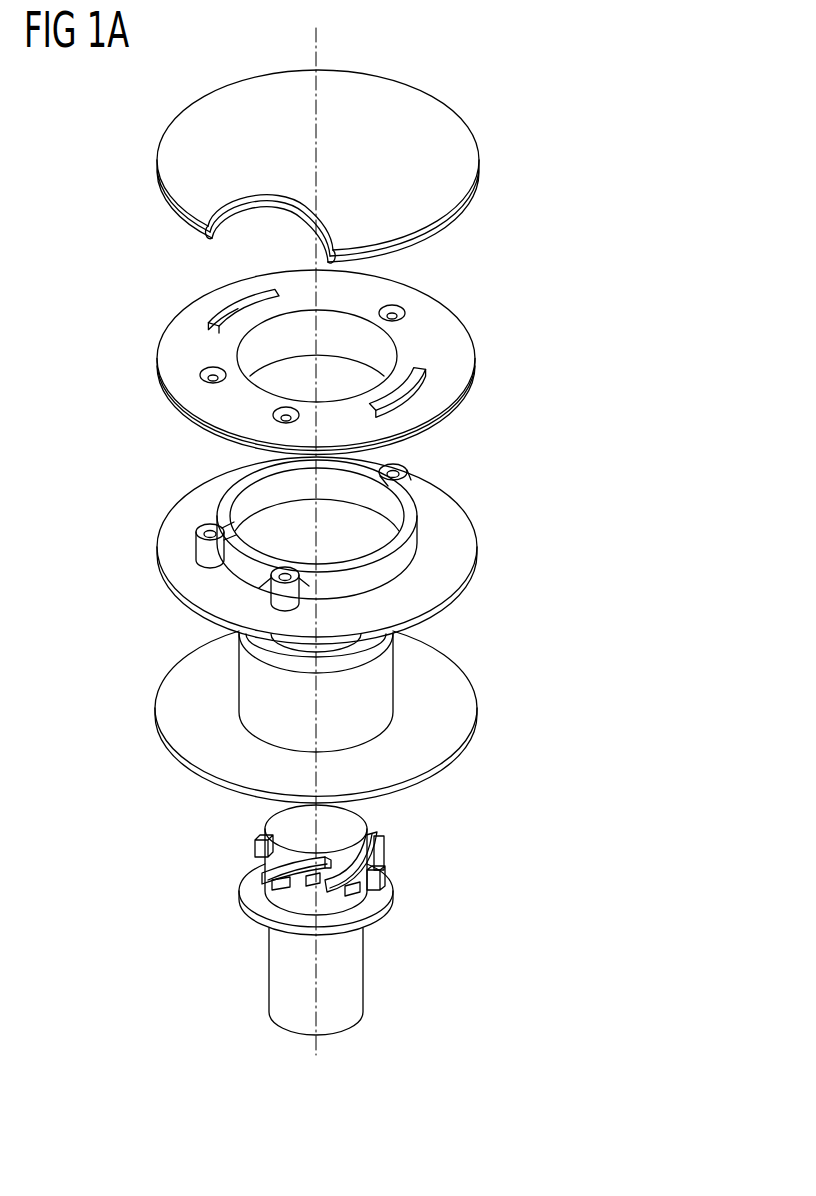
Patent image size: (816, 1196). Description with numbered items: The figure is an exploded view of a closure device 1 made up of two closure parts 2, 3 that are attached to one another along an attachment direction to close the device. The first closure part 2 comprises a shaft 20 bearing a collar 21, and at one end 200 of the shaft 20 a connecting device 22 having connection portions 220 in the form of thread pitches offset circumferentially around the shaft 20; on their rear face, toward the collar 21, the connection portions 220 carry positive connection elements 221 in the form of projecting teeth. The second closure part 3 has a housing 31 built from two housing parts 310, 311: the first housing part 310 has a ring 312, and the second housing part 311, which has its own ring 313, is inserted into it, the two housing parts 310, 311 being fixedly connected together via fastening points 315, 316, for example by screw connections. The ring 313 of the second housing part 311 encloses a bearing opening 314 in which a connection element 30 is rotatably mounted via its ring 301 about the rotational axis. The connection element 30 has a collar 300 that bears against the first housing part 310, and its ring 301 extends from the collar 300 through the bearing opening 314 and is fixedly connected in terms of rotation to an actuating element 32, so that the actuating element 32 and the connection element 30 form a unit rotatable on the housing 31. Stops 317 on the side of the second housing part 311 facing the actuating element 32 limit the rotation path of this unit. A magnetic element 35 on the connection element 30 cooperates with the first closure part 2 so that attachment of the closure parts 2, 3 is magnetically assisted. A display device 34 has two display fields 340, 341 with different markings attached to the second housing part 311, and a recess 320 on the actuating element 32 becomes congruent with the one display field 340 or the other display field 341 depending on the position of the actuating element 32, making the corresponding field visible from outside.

The closure device 1 is at (452, 92).
The first closure part 2 is at (93, 795).
The second closure part 3 is at (93, 790).
The shaft 20 is at (280, 970).
The collar 21 is at (263, 926).
The connecting device 22 is at (302, 887).
The end 200 is at (350, 822).
The connection portions 220 is at (367, 847).
The positive connection elements 221 is at (378, 853).
The connection element 30 is at (290, 735).
The collar 300 is at (218, 770).
The ring 301 is at (257, 700).
The housing 31 is at (294, 541).
The first housing part 310 is at (185, 583).
The second housing part 311 is at (173, 361).
The ring 312 is at (220, 510).
The ring 313 is at (253, 350).
The bearing opening 314 is at (283, 377).
The fastening points 315 is at (405, 468).
The fastening points 316 is at (397, 312).
The stops 317 is at (223, 308).
The actuating element 32 is at (302, 166).
The recess 320 is at (265, 222).
The display device 34 is at (316, 358).
The display field 340 is at (180, 402).
The display field 341 is at (245, 446).
The magnetic element 35 is at (293, 647).